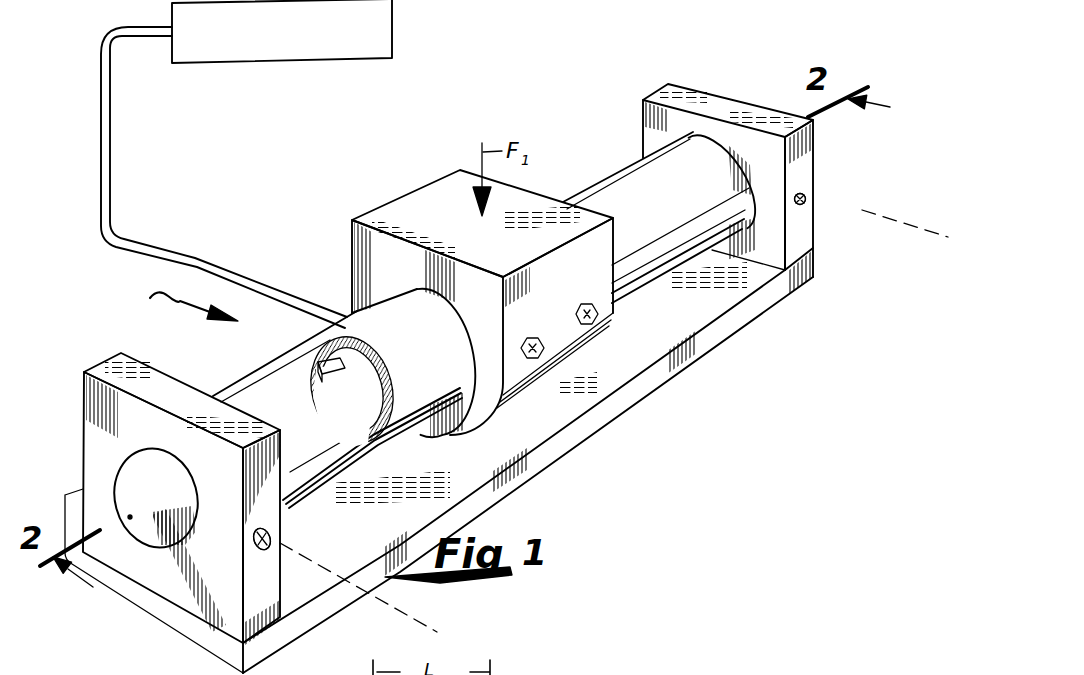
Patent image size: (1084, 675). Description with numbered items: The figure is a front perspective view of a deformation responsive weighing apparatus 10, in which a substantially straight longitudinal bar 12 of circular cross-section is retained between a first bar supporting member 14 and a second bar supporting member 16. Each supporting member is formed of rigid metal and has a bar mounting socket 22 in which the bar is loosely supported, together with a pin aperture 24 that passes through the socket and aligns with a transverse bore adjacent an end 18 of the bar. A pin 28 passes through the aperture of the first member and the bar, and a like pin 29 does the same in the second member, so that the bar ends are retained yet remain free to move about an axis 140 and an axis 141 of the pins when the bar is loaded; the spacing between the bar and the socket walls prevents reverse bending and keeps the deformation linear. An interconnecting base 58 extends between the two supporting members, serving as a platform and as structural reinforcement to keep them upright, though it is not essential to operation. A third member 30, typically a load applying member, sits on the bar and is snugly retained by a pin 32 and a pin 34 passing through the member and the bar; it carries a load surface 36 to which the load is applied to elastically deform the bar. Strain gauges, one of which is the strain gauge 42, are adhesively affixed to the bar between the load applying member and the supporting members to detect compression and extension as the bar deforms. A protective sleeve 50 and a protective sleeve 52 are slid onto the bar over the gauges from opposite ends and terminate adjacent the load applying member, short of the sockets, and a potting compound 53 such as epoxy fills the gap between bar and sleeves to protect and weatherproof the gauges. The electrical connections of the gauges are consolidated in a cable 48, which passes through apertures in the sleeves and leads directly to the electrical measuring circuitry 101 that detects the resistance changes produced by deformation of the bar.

The deformation responsive weighing apparatus 10 is at (174, 301).
The longitudinal bar 12 is at (116, 473).
The first bar supporting member 14 is at (92, 413).
The second bar supporting member 16 is at (812, 148).
The end of the bar 18 is at (164, 504).
The bar mounting socket 22 is at (130, 517).
The pin aperture 24 is at (269, 528).
The pin 28 is at (271, 543).
The pin 29 is at (808, 204).
The third member 30 is at (441, 183).
The pin 32 is at (533, 338).
The pin 34 is at (599, 314).
The load surface 36 is at (444, 217).
The strain gauge 42 is at (318, 378).
The cable 48 is at (196, 258).
The protective sleeve 50 is at (245, 378).
The protective sleeve 52 is at (605, 178).
The potting compound 53 is at (352, 358).
The interconnecting base 58 is at (763, 300).
The electrical measuring circuitry 101 is at (393, 30).
The axis 140 is at (414, 617).
The axis 141 is at (905, 232).